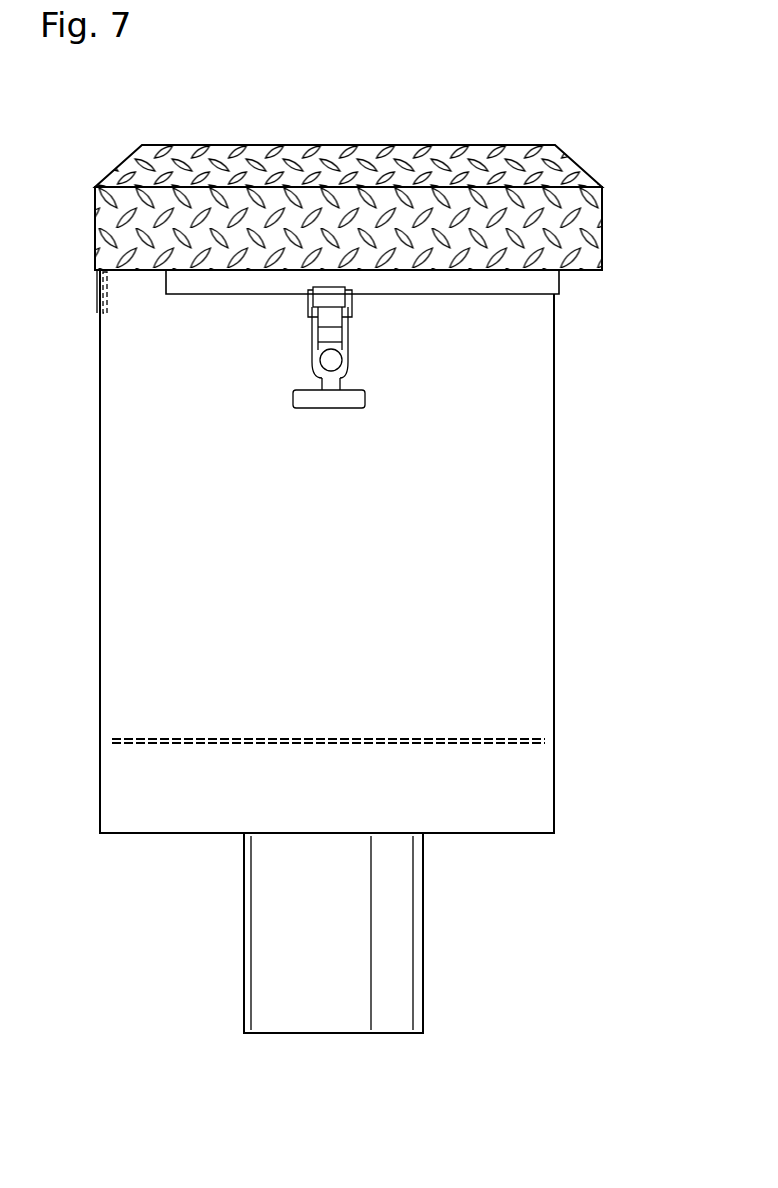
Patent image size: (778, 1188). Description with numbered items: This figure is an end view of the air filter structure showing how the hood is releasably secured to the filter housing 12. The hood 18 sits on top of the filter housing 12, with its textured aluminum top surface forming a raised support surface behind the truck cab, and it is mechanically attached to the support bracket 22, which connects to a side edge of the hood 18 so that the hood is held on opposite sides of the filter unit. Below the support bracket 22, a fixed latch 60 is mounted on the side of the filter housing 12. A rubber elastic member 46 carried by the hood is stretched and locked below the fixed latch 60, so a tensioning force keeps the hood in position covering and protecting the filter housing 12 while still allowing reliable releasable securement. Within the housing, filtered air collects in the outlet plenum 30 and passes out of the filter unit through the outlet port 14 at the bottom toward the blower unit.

The hood 18 is at (420, 144).
The support bracket 22 is at (507, 278).
The fixed latch 60 is at (335, 358).
The rubber elastic member 46 is at (328, 408).
The filter housing 12 is at (518, 567).
The outlet plenum 30 is at (490, 793).
The outlet port 14 is at (400, 950).